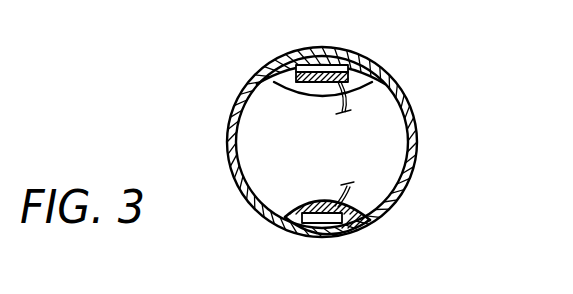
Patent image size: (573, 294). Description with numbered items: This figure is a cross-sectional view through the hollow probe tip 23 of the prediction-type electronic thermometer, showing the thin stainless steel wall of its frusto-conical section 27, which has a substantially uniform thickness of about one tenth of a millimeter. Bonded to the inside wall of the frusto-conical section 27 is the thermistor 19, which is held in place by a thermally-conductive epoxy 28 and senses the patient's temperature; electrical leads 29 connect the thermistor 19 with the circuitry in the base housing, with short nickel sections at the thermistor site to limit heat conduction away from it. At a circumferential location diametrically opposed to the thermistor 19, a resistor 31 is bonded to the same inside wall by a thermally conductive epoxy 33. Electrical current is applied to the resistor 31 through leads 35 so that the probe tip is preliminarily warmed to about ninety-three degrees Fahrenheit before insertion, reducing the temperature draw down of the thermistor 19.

The thermistor 19 is at (314, 223).
The hollow probe tip 23 is at (378, 142).
The frusto-conical section 27 is at (416, 150).
The thermally-conductive epoxy 28 is at (316, 206).
The electrical leads 29 is at (385, 211).
The resistor 31 is at (338, 66).
The thermally conductive epoxy 33 is at (257, 86).
The leads 35 is at (346, 97).